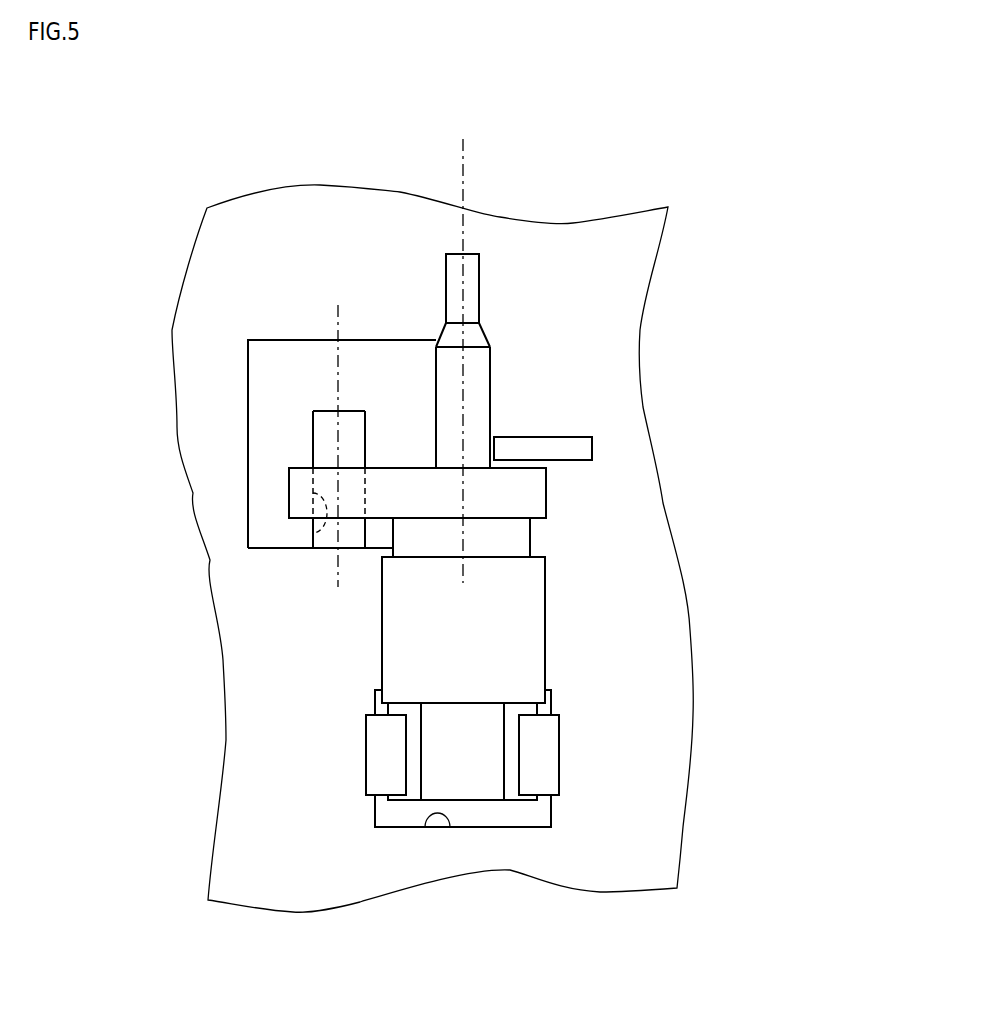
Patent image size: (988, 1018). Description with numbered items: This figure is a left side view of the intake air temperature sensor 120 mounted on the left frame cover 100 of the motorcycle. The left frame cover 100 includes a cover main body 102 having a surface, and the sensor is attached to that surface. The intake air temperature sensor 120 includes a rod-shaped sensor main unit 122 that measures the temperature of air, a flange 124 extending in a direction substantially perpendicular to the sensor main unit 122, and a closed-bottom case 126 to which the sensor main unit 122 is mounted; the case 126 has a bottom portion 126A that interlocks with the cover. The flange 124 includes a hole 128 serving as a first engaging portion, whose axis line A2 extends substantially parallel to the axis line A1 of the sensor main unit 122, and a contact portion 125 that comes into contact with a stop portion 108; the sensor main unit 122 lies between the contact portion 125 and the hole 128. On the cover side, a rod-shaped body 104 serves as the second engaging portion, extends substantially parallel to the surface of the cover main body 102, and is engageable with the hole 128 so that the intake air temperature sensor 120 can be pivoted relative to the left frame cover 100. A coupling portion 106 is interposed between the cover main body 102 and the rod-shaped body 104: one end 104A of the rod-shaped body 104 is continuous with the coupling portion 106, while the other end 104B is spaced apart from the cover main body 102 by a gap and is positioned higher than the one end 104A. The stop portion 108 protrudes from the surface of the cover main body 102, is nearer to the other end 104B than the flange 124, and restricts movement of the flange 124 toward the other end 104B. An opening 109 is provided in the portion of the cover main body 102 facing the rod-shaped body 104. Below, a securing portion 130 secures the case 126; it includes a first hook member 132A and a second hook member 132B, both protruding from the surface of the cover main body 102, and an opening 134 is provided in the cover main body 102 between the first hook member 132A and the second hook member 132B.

The left frame cover 100 is at (610, 273).
The cover main body 102 is at (583, 602).
The rod-shaped body 104 is at (313, 440).
The one end of the rod-shaped body 104A is at (328, 550).
The other end of the rod-shaped body 104B is at (325, 411).
The coupling portion 106 is at (278, 535).
The stop portion 108 is at (552, 445).
The opening 109 is at (363, 340).
The intake air temperature sensor 120 is at (491, 382).
The sensor main unit 122 is at (480, 290).
The flange 124 is at (289, 493).
The contact portion 125 is at (520, 467).
The case 126 is at (390, 638).
The bottom portion 126A is at (508, 787).
The hole 128 is at (313, 533).
The securing portion 130 is at (490, 782).
The first hook member 132A is at (380, 768).
The second hook member 132B is at (545, 768).
The opening 134 is at (450, 827).
The axis line of the sensor main unit A1 is at (463, 157).
The axis line of the hole A2 is at (338, 320).